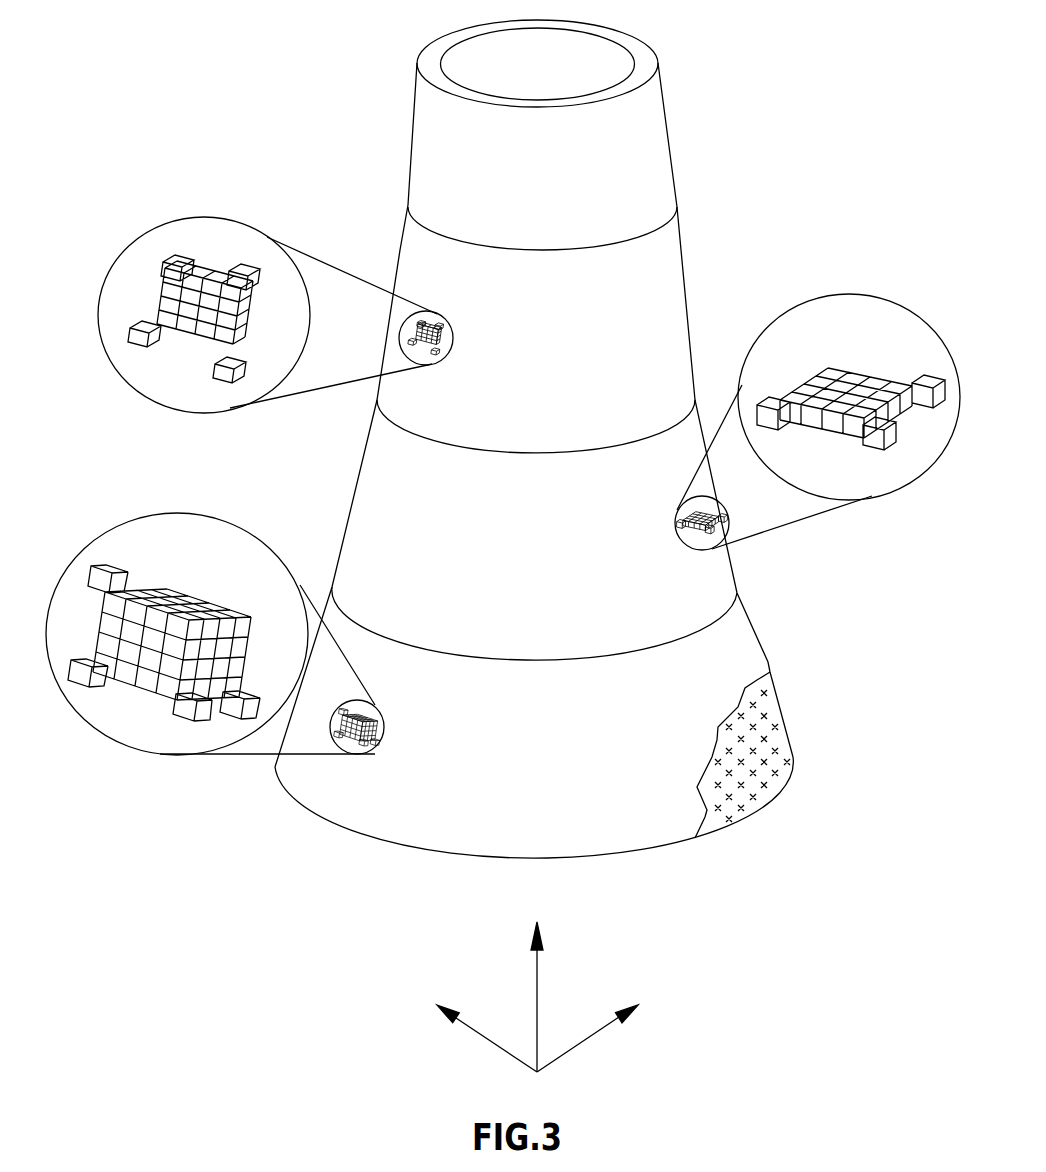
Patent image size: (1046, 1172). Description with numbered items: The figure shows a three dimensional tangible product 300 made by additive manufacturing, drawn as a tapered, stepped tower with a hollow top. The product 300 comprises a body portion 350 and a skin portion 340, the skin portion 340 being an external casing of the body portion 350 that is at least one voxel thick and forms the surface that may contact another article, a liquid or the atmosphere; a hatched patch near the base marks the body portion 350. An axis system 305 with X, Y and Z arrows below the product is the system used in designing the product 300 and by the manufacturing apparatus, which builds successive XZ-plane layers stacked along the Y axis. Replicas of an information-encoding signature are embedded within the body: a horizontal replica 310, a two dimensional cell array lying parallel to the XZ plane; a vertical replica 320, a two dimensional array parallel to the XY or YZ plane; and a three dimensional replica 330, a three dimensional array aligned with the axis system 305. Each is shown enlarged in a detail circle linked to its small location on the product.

The product 300 is at (428, 142).
The axis system 305 is at (483, 1036).
The horizontal replica 310 is at (858, 389).
The vertical replica 320 is at (166, 268).
The 3D replica 330 is at (160, 587).
The skin portion 340 is at (747, 643).
The body portion 350 is at (770, 747).